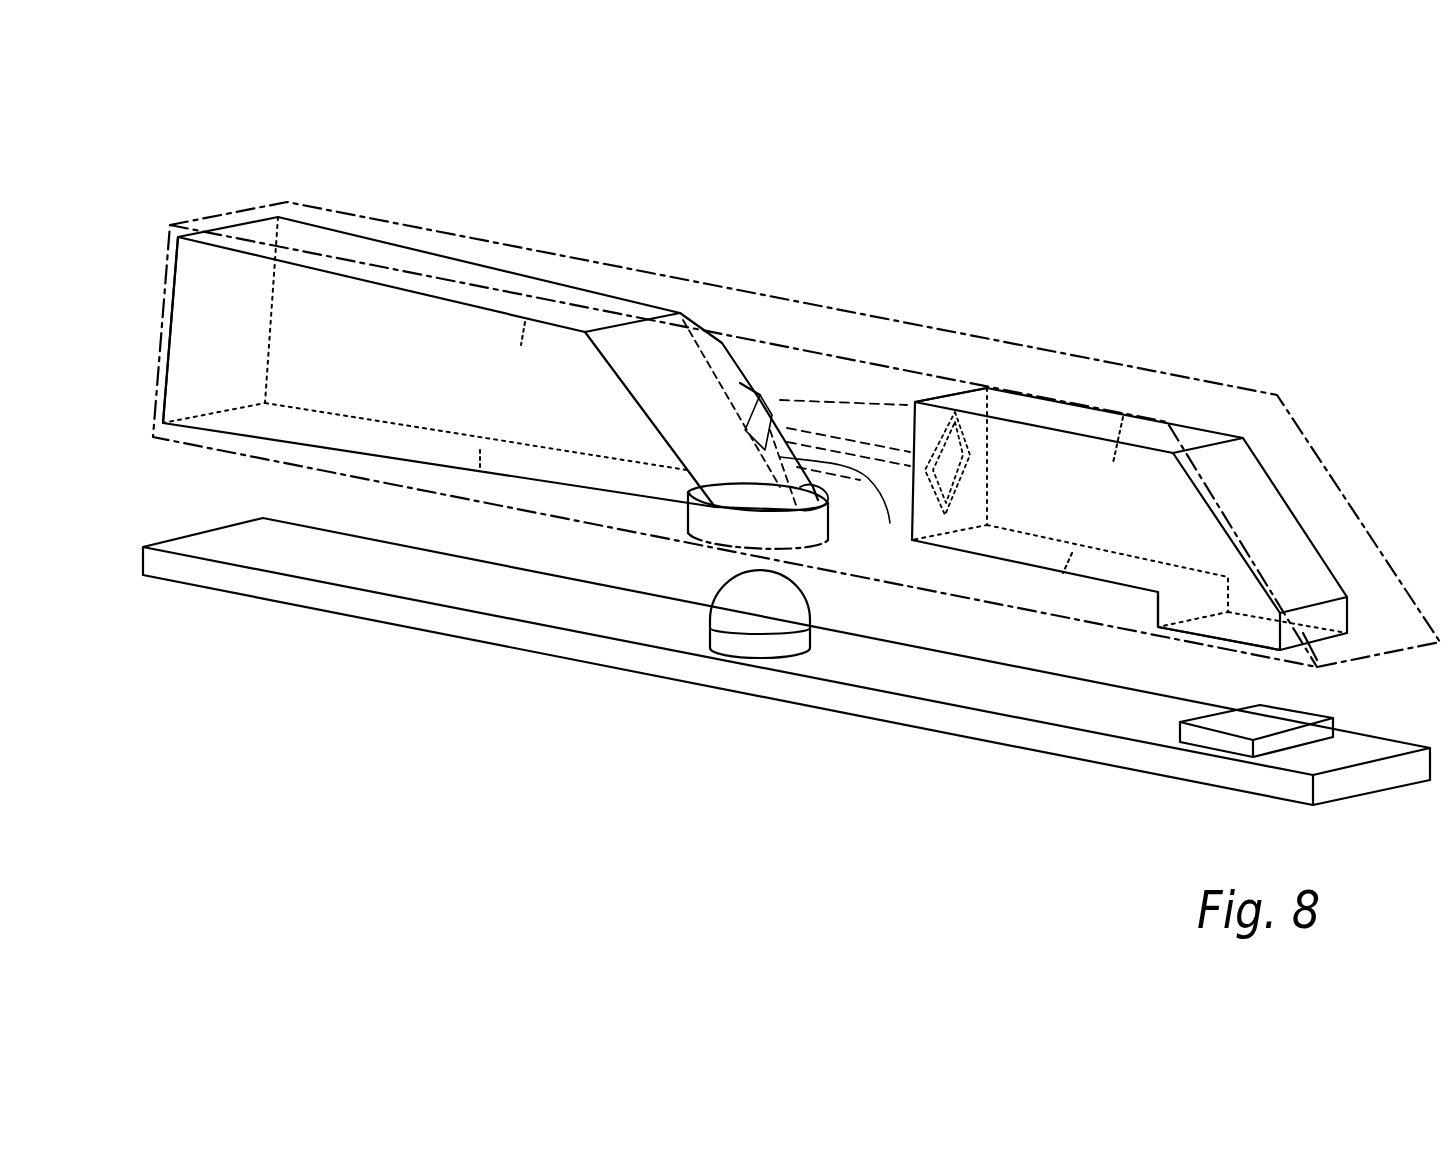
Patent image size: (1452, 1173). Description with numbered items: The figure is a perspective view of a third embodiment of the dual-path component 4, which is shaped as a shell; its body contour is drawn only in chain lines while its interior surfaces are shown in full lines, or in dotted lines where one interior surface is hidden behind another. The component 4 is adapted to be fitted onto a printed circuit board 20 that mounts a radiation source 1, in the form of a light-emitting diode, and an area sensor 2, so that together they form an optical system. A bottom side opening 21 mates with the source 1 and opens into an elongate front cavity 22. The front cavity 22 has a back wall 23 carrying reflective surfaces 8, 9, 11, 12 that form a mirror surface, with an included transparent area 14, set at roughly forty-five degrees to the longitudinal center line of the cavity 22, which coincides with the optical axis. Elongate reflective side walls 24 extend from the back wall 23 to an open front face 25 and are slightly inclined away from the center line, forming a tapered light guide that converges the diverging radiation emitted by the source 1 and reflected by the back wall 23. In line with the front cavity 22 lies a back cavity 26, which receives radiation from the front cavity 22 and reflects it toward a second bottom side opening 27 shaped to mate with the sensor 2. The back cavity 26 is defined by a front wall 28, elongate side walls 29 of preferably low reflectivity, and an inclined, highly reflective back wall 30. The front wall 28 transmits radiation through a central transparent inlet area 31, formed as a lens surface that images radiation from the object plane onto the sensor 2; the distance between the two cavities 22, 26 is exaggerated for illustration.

The radiation source 1 is at (733, 612).
The area sensor 2 is at (1217, 740).
The dual-path component 4 is at (890, 283).
The reflective surface 8 is at (740, 383).
The reflective surface 9 is at (703, 398).
The reflective surface 11 is at (807, 483).
The reflective surface 12 is at (844, 508).
The transparent area 14 is at (773, 422).
The printed circuit board 20 is at (478, 625).
The bottom side opening 21 is at (790, 537).
The front cavity 22 is at (430, 384).
The back wall 23 is at (650, 437).
The side walls 24 is at (475, 297).
The front face 25 is at (203, 300).
The back cavity 26 is at (1110, 511).
The bottom side opening 27 is at (1235, 627).
The front wall 28 is at (982, 405).
The side walls 29 is at (1085, 420).
The back wall 30 is at (1275, 528).
The transparent inlet area 31 is at (950, 467).